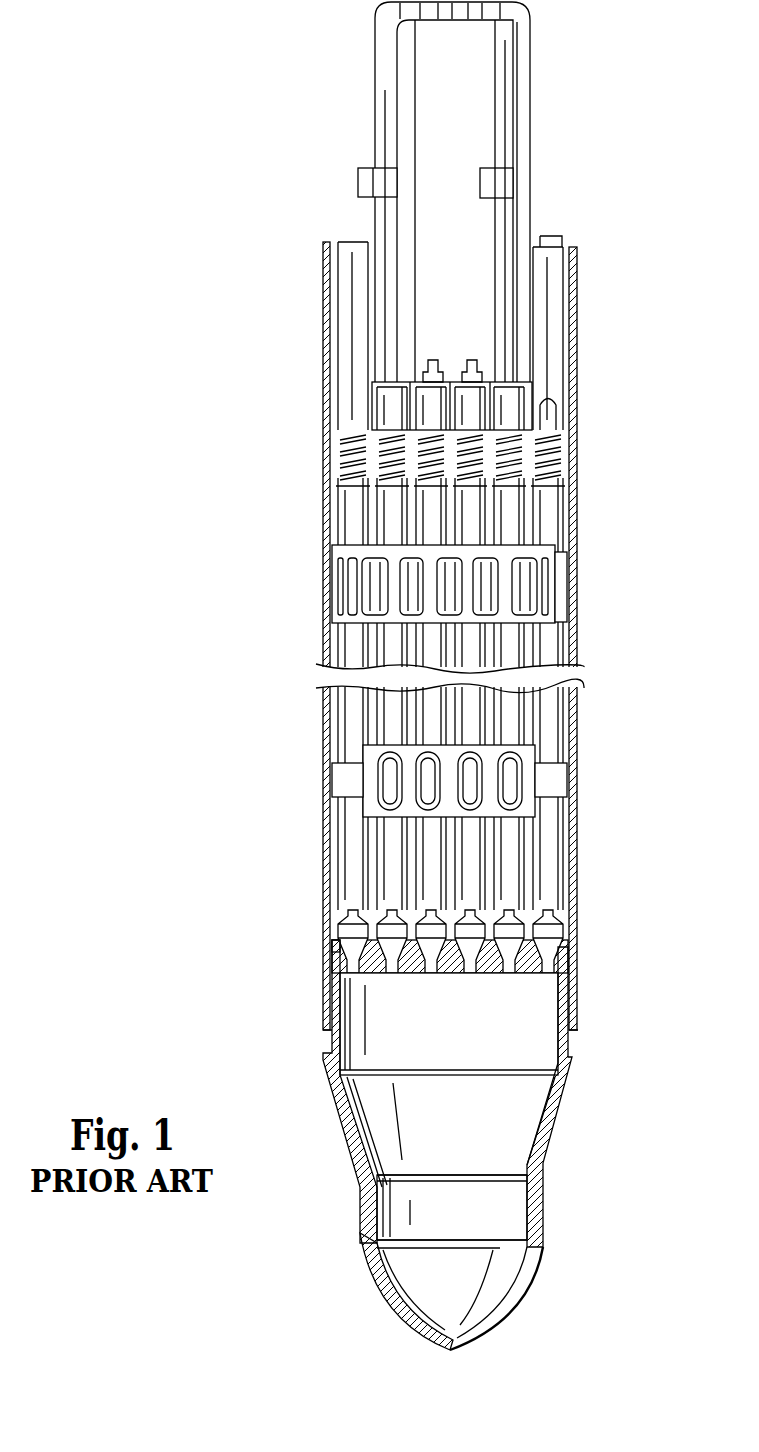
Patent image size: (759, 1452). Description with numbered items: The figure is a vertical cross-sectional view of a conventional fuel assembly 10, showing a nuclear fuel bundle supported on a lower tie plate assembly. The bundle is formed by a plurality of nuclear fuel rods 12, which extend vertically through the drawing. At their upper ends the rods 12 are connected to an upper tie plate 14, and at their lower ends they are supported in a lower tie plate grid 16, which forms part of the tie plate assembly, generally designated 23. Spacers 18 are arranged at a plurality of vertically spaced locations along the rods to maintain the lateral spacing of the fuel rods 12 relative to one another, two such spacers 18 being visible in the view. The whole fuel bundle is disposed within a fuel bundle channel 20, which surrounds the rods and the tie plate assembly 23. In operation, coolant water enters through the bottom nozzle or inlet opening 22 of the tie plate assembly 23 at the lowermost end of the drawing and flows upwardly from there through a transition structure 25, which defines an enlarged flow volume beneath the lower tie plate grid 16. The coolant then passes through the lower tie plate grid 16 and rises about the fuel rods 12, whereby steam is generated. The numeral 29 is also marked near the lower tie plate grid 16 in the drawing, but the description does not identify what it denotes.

The fuel assembly 10 is at (490, 676).
The nuclear fuel rods 12 is at (545, 515).
The upper tie plate 14 is at (345, 413).
The lower tie plate grid 16 is at (560, 952).
The spacers 18 is at (565, 598).
The fuel bundle channel 20 is at (322, 885).
The bottom nozzle or inlet opening 22 is at (467, 1223).
The tie plate assembly 23 is at (598, 1180).
The transition structure 25 is at (340, 1112).
The debris catcher / plate edge 29 is at (337, 947).